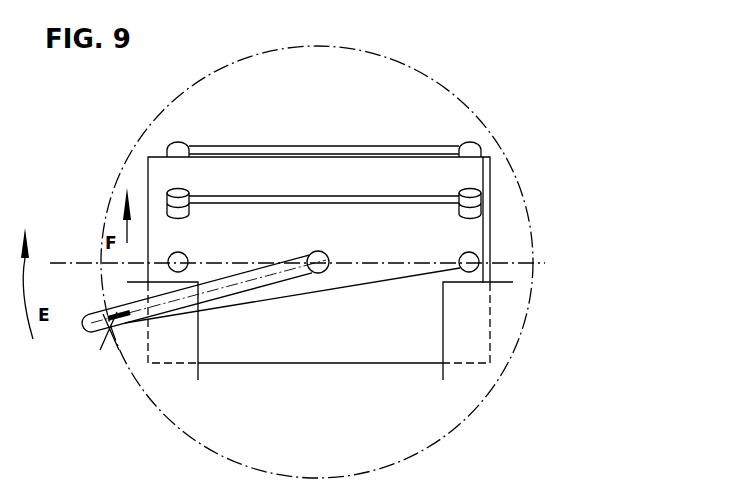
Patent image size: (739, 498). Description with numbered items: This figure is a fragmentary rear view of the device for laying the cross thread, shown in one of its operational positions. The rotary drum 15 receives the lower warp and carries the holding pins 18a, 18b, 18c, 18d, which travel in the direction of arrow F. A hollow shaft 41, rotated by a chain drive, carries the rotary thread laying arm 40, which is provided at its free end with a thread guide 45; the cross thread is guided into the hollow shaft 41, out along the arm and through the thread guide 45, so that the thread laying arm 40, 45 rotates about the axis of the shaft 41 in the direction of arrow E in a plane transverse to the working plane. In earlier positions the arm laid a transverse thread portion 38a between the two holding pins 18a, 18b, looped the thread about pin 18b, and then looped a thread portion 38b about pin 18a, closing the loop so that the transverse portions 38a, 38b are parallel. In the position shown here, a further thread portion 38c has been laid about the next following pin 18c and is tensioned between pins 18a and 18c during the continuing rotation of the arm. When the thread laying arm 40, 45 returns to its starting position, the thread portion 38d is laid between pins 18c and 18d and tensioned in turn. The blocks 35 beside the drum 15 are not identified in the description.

The rotary drum 15 is at (275, 347).
The support blocks 35 is at (185, 347).
The holding pin 18a is at (470, 190).
The holding pin 18b is at (180, 197).
The holding pin 18c is at (458, 261).
The holding pin 18d is at (182, 258).
The transverse portion of cross thread 38a is at (296, 204).
The thread portion 38b is at (313, 196).
The thread portion 38c is at (482, 237).
The thread portion 38d is at (377, 285).
The rotary thread laying arm 40 is at (248, 274).
The hollow shaft 41 is at (330, 258).
The thread guide 45 is at (109, 342).